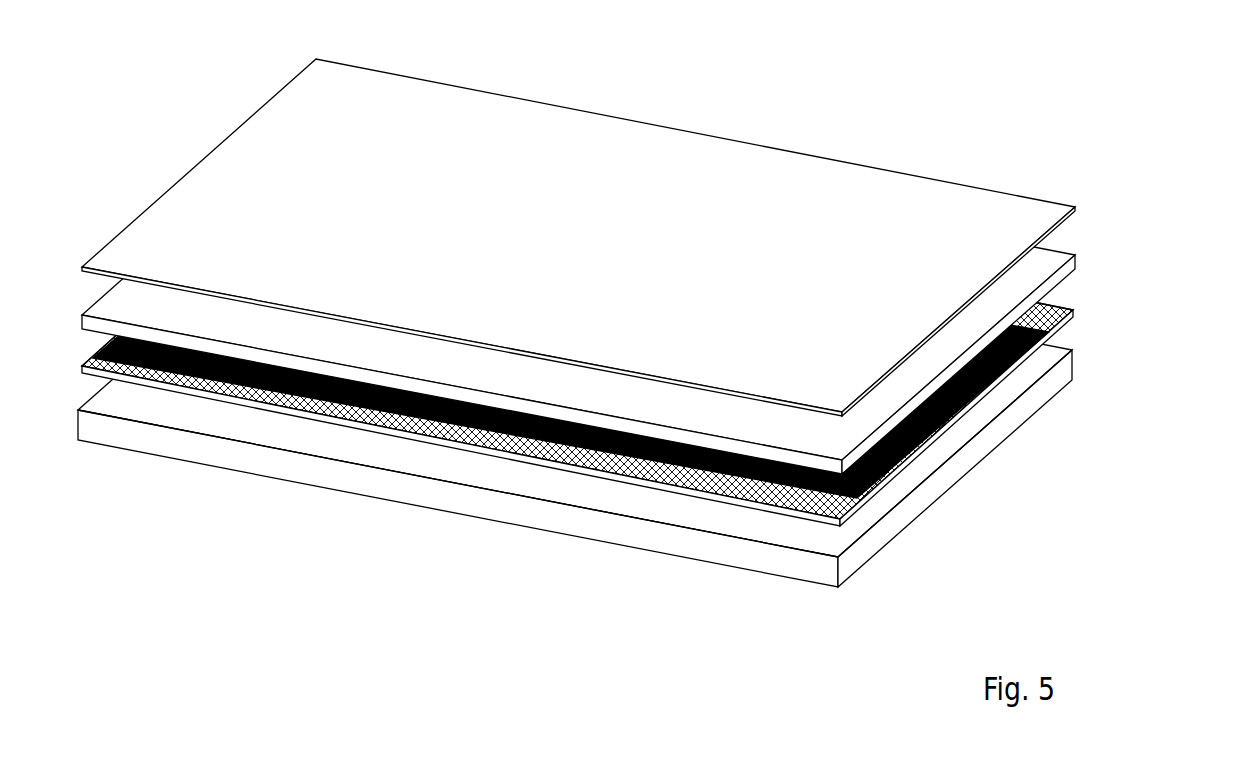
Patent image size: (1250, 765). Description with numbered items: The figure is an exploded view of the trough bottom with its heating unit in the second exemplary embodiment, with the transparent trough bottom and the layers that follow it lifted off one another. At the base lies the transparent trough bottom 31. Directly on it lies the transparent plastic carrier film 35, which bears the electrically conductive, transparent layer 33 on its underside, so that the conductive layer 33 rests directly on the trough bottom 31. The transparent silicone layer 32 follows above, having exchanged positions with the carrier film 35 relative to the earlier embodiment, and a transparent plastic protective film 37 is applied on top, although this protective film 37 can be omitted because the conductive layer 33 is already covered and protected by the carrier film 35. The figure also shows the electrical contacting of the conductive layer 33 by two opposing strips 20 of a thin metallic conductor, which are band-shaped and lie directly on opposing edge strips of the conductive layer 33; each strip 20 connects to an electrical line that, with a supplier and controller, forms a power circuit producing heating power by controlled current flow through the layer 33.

The transparent plastic protective film 37 is at (919, 177).
The transparent silicone layer 32 is at (1075, 264).
The strips of a thin metallic conductor 20 is at (777, 500).
The electrically conductive, transparent layer 33 is at (1045, 335).
The transparent plastic carrier film 35 is at (972, 403).
The transparent trough bottom 31 is at (893, 518).